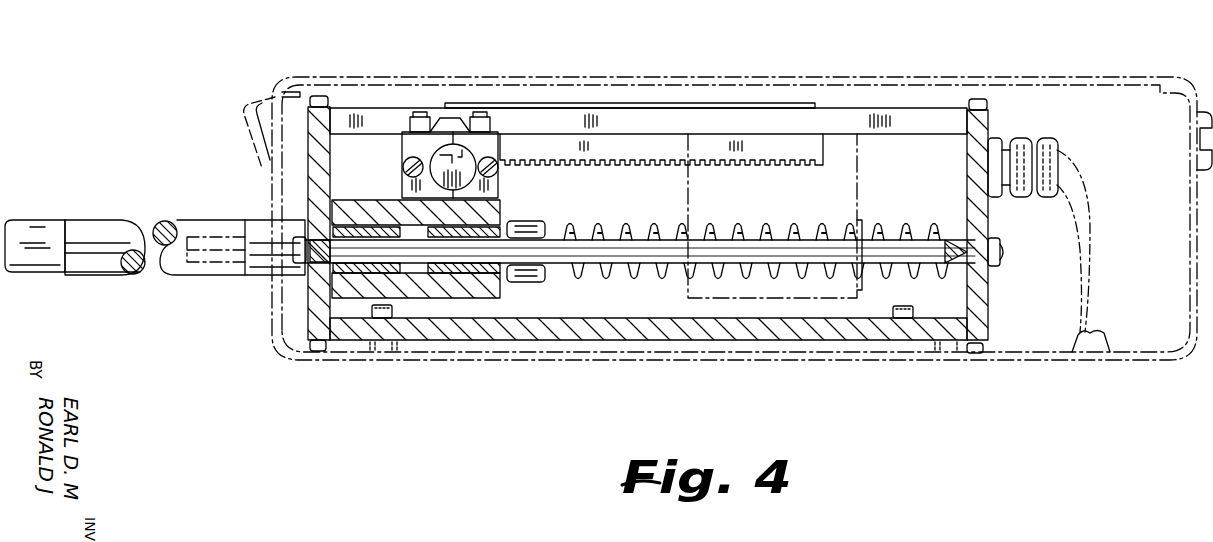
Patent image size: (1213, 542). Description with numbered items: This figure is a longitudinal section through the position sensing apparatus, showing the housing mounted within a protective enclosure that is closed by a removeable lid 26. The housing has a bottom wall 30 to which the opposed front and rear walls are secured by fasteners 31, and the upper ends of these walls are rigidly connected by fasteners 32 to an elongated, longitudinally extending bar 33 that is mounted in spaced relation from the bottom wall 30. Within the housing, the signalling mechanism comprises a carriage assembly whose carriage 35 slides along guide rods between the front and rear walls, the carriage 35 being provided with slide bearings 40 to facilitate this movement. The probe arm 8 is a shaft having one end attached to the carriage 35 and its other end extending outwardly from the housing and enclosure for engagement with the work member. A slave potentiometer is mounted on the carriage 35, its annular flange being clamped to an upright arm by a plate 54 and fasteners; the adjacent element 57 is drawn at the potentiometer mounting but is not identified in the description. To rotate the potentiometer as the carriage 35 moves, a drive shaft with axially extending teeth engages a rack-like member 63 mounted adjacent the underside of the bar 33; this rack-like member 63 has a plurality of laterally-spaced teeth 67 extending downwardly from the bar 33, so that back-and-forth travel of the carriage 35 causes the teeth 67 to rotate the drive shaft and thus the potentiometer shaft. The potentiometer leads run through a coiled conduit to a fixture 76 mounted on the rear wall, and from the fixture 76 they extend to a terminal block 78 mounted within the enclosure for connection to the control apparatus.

The probe arm 8 is at (113, 227).
The removeable lid 26 is at (1083, 80).
The bottom wall 30 is at (843, 338).
The fasteners 31 is at (318, 350).
The fasteners 32 is at (318, 96).
The bar 33 is at (823, 118).
The carriage 35 is at (490, 293).
The slide bearings 40 is at (383, 228).
The plate 54 is at (403, 133).
The switch mounting screws 57 is at (405, 158).
The rack-like member 63 is at (550, 143).
The teeth 67 is at (628, 165).
The fixture 76 is at (1012, 140).
The terminal block 78 is at (500, 206).